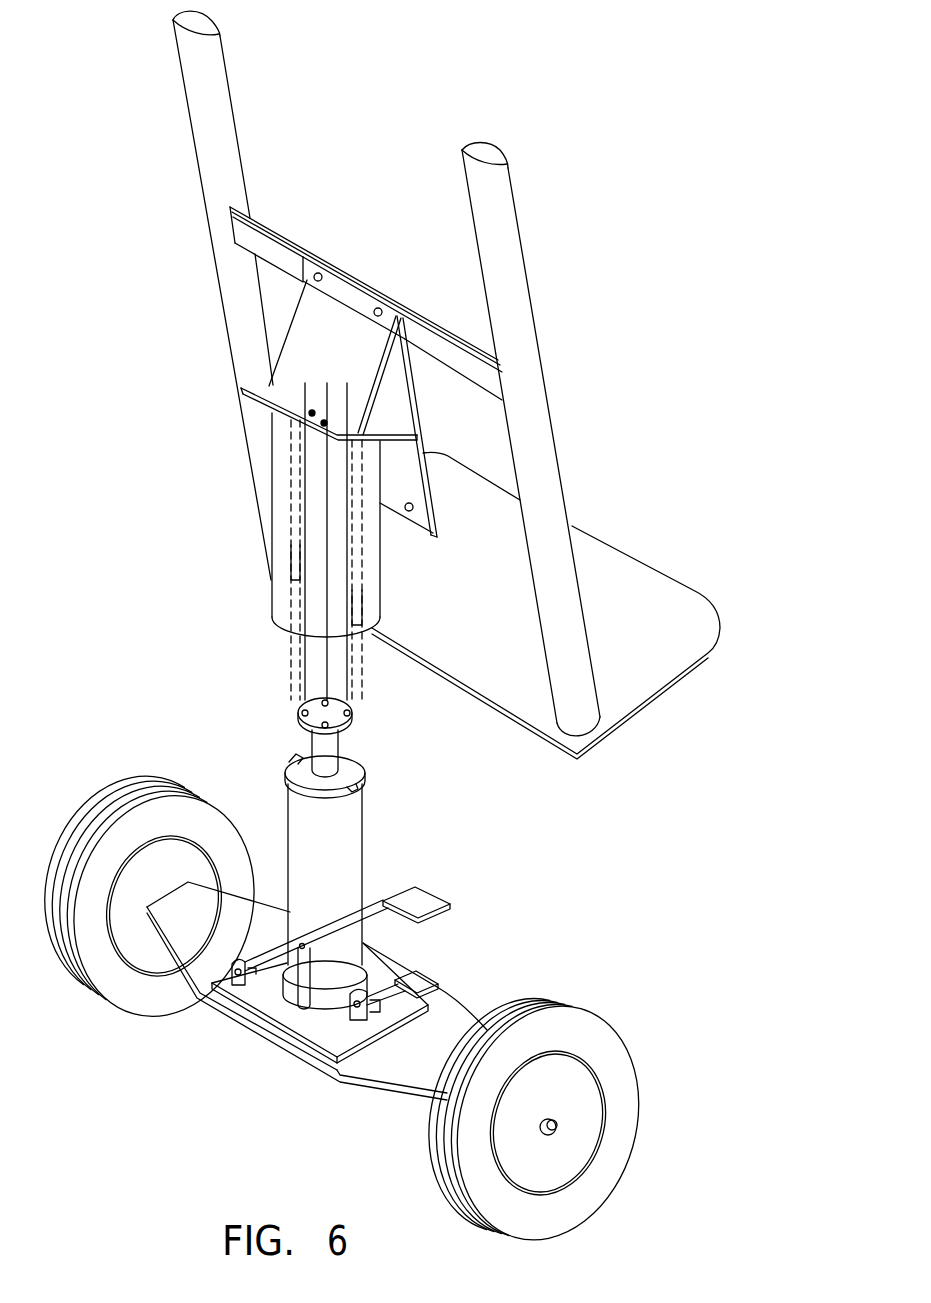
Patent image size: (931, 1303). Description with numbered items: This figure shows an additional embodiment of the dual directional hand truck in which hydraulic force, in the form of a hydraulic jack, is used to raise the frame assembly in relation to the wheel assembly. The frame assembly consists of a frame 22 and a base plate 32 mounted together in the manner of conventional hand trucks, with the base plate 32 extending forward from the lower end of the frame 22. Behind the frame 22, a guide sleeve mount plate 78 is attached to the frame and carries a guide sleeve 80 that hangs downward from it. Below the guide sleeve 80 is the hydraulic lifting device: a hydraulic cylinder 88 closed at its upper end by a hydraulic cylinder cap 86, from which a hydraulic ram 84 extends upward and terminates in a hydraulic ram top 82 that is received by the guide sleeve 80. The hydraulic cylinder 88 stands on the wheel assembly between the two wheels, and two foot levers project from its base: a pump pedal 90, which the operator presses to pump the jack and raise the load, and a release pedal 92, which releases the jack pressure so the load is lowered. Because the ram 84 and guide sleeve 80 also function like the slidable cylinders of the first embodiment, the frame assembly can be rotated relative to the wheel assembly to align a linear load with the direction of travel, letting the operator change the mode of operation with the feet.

The frame 22 is at (503, 263).
The base plate 32 is at (627, 590).
The guide sleeve mount plate 78 is at (295, 358).
The guide sleeve 80 is at (283, 605).
The hydraulic ram top 82 is at (307, 700).
The hydraulic ram 84 is at (320, 753).
The hydraulic cylinder cap 86 is at (302, 775).
The hydraulic cylinder 88 is at (302, 830).
The pump pedal 90 is at (423, 900).
The release pedal 92 is at (422, 982).